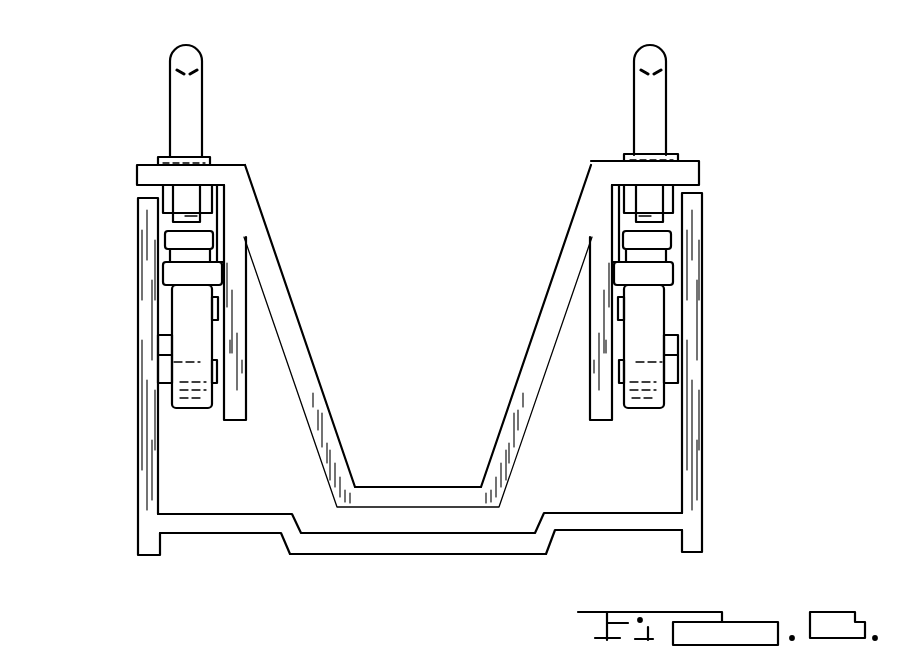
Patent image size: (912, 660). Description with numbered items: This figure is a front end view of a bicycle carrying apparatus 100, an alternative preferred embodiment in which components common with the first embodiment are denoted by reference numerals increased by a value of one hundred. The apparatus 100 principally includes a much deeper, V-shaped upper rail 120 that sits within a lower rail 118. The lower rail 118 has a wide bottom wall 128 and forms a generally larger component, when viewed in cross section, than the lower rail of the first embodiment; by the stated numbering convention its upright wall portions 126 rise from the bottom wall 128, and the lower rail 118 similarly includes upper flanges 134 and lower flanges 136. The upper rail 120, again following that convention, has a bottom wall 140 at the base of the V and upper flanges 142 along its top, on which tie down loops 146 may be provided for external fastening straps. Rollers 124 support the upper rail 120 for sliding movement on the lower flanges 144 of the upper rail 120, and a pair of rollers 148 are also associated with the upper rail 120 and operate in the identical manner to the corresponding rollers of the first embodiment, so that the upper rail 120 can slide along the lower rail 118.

The bicycle carrying apparatus 100 is at (103, 93).
The lower rail 118 is at (714, 453).
The upper rail 120 is at (538, 272).
The rollers 124 is at (182, 318).
The side wall 126 is at (147, 450).
The bottom wall 128 is at (347, 542).
The upper flanges 134 is at (170, 237).
The lower flanges 136 is at (167, 373).
The bottom wall 140 is at (390, 493).
The top plate 142 is at (140, 165).
The lower flanges 144 is at (183, 275).
The contact pin 146 is at (190, 100).
The rollers 148 is at (180, 255).